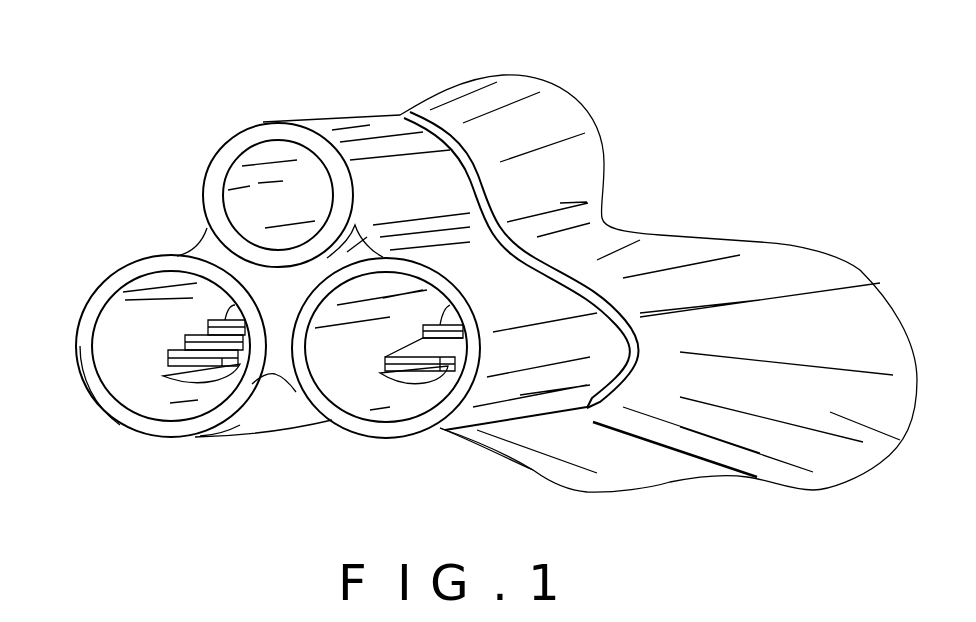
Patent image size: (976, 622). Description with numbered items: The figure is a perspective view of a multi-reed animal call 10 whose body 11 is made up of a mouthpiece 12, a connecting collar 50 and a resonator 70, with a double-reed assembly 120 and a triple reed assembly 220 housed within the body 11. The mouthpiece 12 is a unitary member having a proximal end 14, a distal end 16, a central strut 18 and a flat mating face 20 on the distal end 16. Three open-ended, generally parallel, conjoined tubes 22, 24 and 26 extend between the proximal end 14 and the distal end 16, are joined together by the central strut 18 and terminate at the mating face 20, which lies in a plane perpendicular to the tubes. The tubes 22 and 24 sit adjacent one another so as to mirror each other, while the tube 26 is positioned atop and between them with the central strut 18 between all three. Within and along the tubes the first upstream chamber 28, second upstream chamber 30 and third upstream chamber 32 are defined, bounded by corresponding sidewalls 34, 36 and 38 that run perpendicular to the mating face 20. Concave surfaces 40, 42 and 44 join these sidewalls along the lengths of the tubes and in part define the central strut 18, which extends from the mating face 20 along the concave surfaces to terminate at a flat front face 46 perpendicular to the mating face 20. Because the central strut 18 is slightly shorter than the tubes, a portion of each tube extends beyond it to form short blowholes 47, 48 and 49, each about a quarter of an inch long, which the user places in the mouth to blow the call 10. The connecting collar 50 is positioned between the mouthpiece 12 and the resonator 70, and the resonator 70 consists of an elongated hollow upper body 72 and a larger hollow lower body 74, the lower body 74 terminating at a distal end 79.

The multi-reed animal call 10 is at (684, 131).
The body 11 is at (683, 258).
The mouthpiece 12 is at (240, 118).
The proximal end 14 is at (142, 247).
The distal end 16 is at (410, 107).
The central strut 18 is at (373, 223).
The mating face 20 is at (603, 226).
The tube 22 is at (237, 427).
The tube 24 is at (530, 402).
The tube 26 is at (355, 130).
The first upstream chamber 28 is at (150, 302).
The second upstream chamber 30 is at (300, 376).
The third upstream chamber 32 is at (252, 191).
The sidewall 34 is at (147, 288).
The sidewall 36 is at (353, 388).
The sidewall 38 is at (257, 165).
The concave surface 40 is at (200, 243).
The concave surface 42 is at (433, 197).
The concave surface 44 is at (273, 380).
The front face 46 is at (281, 282).
The blowhole 47 is at (118, 423).
The blowhole 48 is at (462, 438).
The blowhole 49 is at (280, 133).
The connecting collar 50 is at (630, 367).
The resonator 70 is at (783, 263).
The upper body 72 is at (547, 137).
The lower body 74 is at (910, 445).
The distal end 79 is at (877, 285).
The double-reed assembly 120 is at (398, 394).
The triple reed assembly 220 is at (143, 345).